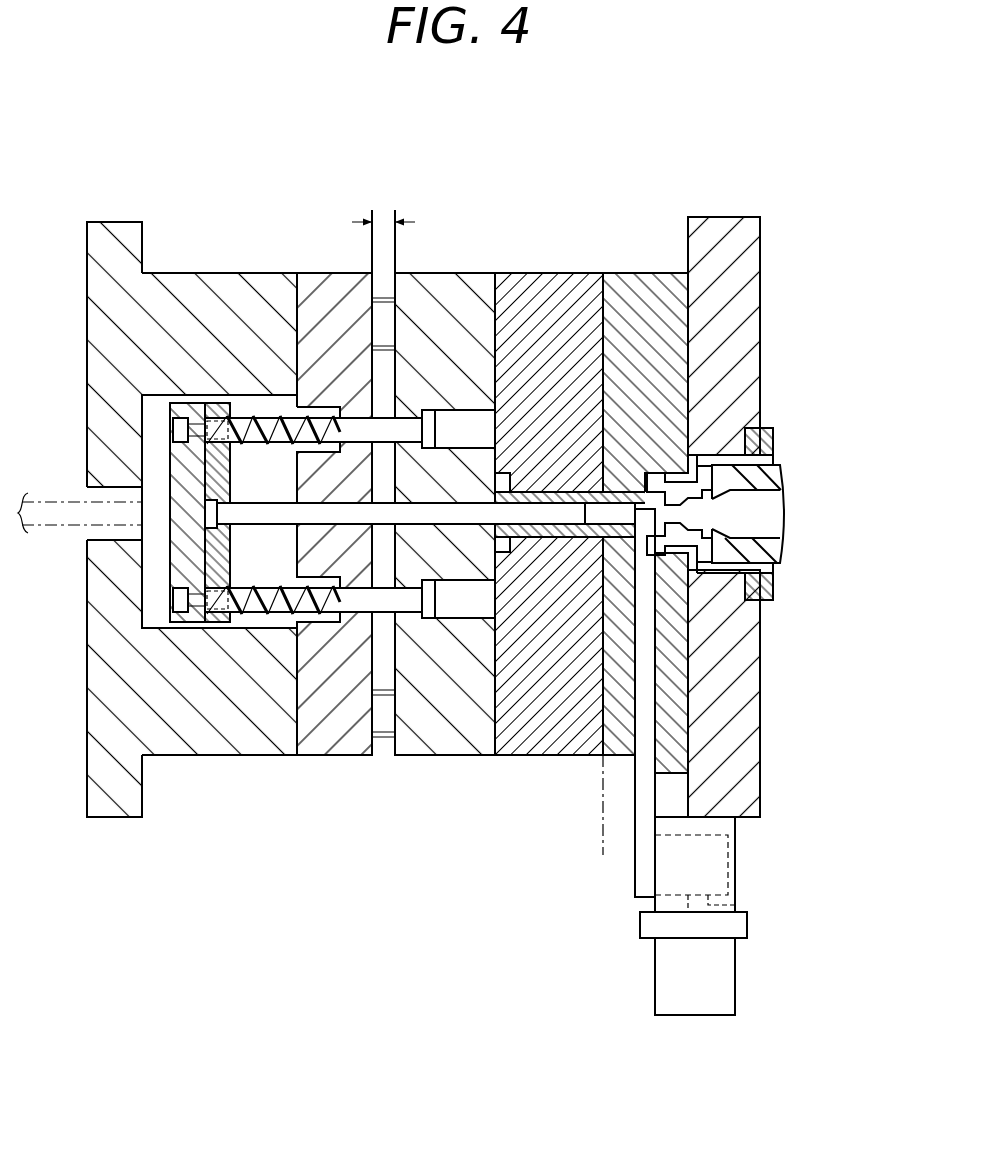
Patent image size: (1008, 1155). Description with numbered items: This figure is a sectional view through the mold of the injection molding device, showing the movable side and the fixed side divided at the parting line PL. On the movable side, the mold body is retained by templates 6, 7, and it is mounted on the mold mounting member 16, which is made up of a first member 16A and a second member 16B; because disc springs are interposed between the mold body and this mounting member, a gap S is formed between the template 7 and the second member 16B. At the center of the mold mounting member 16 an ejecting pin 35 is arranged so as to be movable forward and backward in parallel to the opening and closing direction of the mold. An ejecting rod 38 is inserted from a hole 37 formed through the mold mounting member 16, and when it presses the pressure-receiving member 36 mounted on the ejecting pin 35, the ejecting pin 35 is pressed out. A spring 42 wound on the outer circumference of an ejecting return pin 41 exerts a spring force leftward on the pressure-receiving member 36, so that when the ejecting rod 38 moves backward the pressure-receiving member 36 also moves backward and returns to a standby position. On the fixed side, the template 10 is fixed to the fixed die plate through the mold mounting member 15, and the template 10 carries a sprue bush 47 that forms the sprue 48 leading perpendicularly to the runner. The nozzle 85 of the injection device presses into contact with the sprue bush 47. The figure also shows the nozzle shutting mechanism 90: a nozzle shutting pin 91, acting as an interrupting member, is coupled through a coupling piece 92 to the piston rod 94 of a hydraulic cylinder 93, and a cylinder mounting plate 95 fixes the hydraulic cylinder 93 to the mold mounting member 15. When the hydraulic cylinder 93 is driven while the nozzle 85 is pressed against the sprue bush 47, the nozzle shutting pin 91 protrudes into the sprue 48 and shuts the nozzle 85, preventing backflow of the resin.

The template 6 is at (555, 720).
The template 7 is at (456, 720).
The template 10 is at (617, 745).
The mold mounting member 15 is at (722, 232).
The mold mounting member 16 is at (210, 725).
The first member 16A is at (120, 785).
The second member 16B is at (340, 725).
The ejecting pin 35 is at (260, 515).
The pressure-receiving member 36 is at (185, 462).
The hole 37 is at (115, 533).
The ejecting rod 38 is at (68, 497).
The ejecting return pin 41 is at (273, 430).
The spring 42 is at (253, 413).
The sprue bush 47 is at (633, 497).
The sprue 48 is at (603, 515).
The nozzle 85 is at (763, 552).
The nozzle shutting mechanism 90 is at (826, 855).
The nozzle shutting pin 91 is at (650, 660).
The coupling piece 92 is at (737, 873).
The hydraulic cylinder 93 is at (737, 970).
The piston rod 94 is at (737, 905).
The cylinder mounting plate 95 is at (748, 843).
The gap S is at (383, 460).
The parting line PL is at (600, 815).